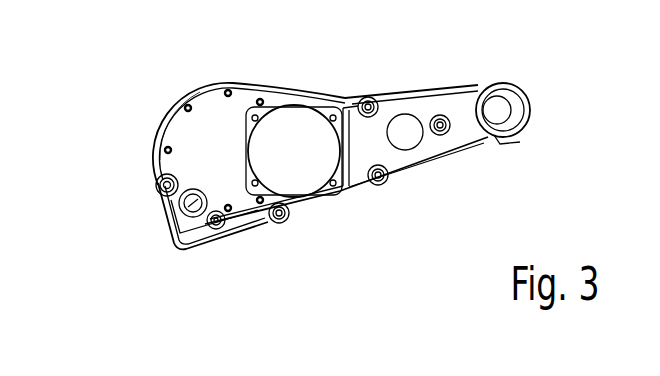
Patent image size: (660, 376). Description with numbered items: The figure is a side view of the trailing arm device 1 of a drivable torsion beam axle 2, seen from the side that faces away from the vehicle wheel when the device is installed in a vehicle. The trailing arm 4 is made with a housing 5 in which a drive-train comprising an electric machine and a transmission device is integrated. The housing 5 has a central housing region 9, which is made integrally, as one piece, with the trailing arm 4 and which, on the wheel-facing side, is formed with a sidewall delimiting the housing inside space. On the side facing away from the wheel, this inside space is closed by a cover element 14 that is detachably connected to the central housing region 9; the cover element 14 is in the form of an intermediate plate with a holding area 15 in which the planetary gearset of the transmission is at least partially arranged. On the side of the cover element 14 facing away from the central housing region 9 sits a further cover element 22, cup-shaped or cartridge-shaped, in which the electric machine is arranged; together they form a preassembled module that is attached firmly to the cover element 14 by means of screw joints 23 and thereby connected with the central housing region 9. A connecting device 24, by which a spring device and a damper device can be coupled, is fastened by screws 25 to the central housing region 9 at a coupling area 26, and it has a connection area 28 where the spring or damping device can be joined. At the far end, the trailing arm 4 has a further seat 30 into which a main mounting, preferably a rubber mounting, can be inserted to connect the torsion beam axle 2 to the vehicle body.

The trailing arm device 1 is at (551, 107).
The drivable torsion beam axle 2 is at (530, 78).
The trailing arm 4 is at (410, 201).
The housing 5 is at (140, 148).
The central housing region 9 is at (165, 133).
The cover element 14 is at (194, 160).
The holding area 15 is at (317, 86).
The further cover element 22 is at (296, 173).
The screw joints 23 is at (346, 205).
The connecting device 24 is at (173, 264).
The screws 25 is at (283, 247).
The coupling area 26 is at (200, 234).
The connection area 28 is at (162, 216).
The further seat 30 is at (526, 160).